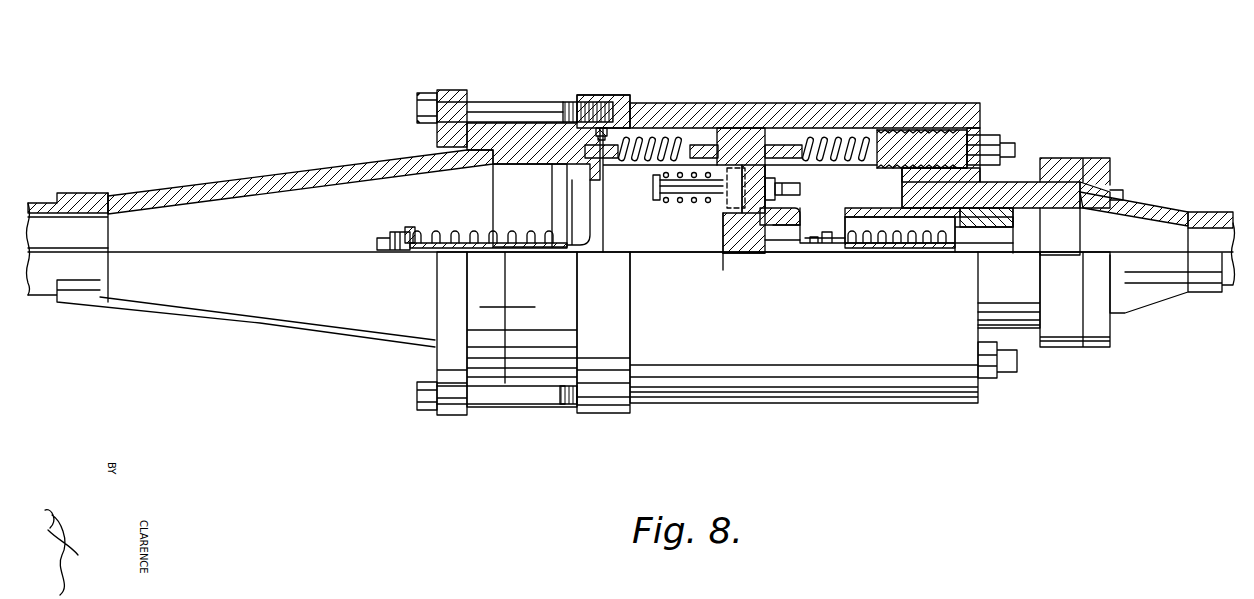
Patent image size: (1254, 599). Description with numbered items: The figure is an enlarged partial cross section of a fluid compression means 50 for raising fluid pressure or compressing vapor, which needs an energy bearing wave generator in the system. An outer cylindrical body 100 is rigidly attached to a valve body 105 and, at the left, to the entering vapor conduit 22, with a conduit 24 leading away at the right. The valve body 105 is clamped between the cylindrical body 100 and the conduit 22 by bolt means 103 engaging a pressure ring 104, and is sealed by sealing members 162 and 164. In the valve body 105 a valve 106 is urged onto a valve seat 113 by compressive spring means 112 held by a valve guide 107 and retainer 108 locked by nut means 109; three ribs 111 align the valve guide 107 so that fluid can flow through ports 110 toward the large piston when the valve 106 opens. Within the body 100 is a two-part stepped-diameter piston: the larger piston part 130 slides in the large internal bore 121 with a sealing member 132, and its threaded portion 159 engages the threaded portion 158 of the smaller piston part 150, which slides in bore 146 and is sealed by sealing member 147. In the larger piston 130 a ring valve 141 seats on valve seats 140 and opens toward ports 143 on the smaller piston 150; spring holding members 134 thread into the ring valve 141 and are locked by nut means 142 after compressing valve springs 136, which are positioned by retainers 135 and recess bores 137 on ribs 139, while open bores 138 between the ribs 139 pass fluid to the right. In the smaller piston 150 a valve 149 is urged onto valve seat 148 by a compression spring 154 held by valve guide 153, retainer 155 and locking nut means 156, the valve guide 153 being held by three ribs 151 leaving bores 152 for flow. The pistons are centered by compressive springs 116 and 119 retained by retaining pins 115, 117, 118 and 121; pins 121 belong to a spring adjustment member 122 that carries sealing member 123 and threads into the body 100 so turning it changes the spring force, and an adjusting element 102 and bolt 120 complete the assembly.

The entering vapor conduit 22 is at (293, 206).
The drive shaft 24 is at (1143, 210).
The fluid compression means 50 is at (812, 412).
The outer cylindrical body 100 is at (927, 105).
The end plate 102 is at (523, 110).
The bolt means 103 is at (422, 93).
The pressure ring 104 is at (457, 90).
The valve body 105 is at (558, 125).
The valve 106 is at (596, 252).
The valve guide 107 is at (517, 250).
The retainer 108 is at (413, 228).
The nut means 109 is at (382, 238).
The ports 110 is at (557, 180).
The ribs 111 is at (552, 201).
The compressive spring means 112 is at (455, 230).
The valve seat 113 is at (593, 180).
The retaining pins 115 is at (641, 160).
The compressive spring 116 is at (640, 135).
The retaining pins 117 is at (698, 130).
The retaining pins 118 is at (795, 132).
The compressive spring 119 is at (835, 132).
The threaded piston 120 is at (873, 130).
The large internal bore 121 is at (895, 133).
The spring adjustment member 122 is at (990, 135).
The sealing member 123 is at (947, 132).
The larger piston part 130 is at (765, 130).
The sealing member 132 is at (752, 130).
The spring holding members 134 is at (655, 195).
The retainers 135 is at (660, 200).
The valve springs 136 is at (683, 203).
The recess bores 137 is at (726, 203).
The open bores 138 is at (715, 250).
The ribs 139 is at (716, 245).
The valve seats 140 is at (767, 172).
The ring valve 141 is at (772, 208).
The nut means 142 is at (780, 190).
The ports 143 is at (890, 222).
The bore 146 is at (1013, 213).
The sealing member 147 is at (940, 207).
The valve seat 148 is at (1013, 222).
The valve 149 is at (1013, 240).
The smaller piston part 150 is at (1007, 183).
The ribs 151 is at (995, 254).
The bores 152 is at (970, 252).
The valve guide 153 is at (930, 252).
The compression spring 154 is at (884, 252).
The retainer 155 is at (851, 252).
The locking nut means 156 is at (830, 252).
The threaded portion 158 is at (777, 252).
The threaded portion 159 is at (740, 252).
The sealing member 162 is at (515, 125).
The sealing member 164 is at (590, 128).